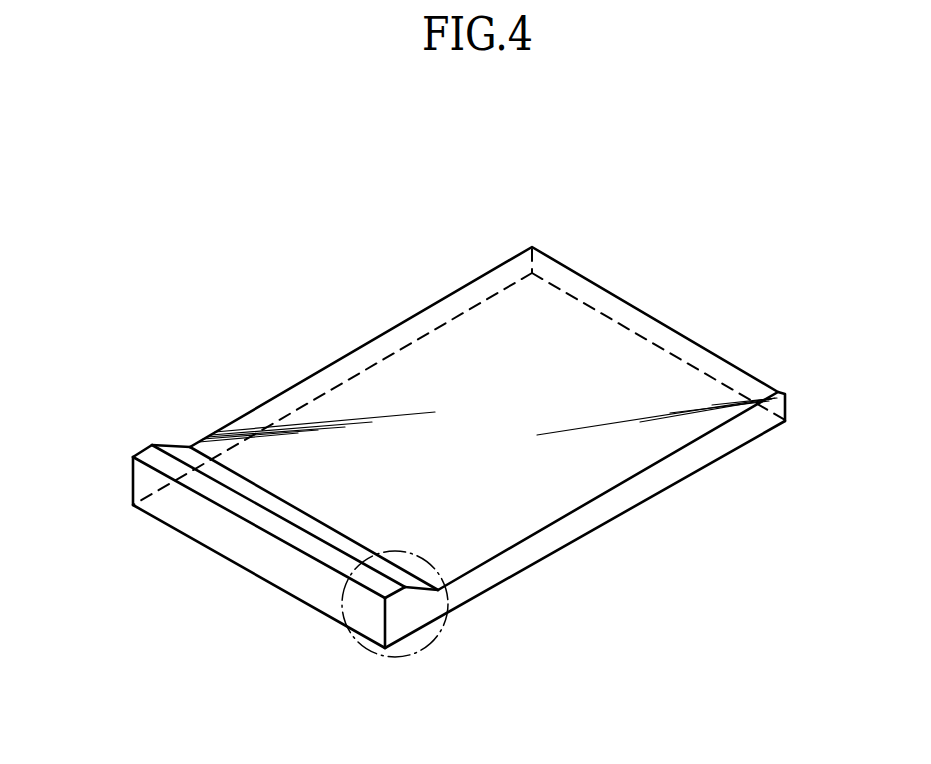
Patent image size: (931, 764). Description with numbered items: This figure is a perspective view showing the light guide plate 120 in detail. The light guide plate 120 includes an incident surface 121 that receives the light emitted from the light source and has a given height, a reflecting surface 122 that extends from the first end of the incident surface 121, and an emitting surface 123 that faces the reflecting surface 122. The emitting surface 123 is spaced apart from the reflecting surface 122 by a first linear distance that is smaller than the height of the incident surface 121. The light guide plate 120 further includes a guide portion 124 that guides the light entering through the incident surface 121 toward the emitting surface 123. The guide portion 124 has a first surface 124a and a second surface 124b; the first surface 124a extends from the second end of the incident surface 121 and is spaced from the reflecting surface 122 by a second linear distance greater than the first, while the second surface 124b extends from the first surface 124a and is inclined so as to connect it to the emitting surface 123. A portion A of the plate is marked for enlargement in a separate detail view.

The light guide plate 120 is at (556, 207).
The incident surface 121 is at (272, 574).
The reflecting surface 122 is at (620, 356).
The emitting surface 123 is at (529, 512).
The guide portion 124 is at (140, 602).
The first surface 124a is at (248, 510).
The second surface 124b is at (242, 488).
The portion A is at (438, 636).